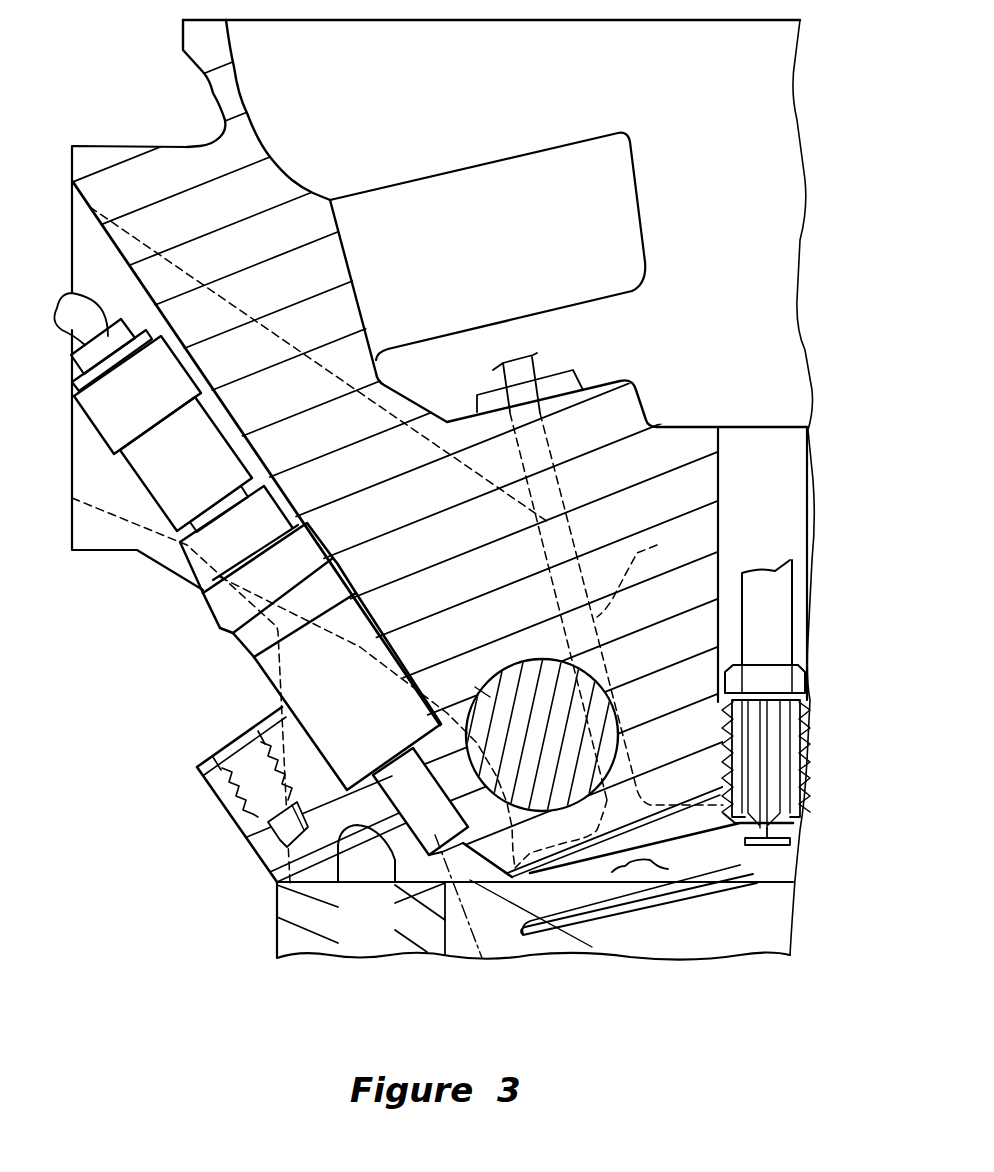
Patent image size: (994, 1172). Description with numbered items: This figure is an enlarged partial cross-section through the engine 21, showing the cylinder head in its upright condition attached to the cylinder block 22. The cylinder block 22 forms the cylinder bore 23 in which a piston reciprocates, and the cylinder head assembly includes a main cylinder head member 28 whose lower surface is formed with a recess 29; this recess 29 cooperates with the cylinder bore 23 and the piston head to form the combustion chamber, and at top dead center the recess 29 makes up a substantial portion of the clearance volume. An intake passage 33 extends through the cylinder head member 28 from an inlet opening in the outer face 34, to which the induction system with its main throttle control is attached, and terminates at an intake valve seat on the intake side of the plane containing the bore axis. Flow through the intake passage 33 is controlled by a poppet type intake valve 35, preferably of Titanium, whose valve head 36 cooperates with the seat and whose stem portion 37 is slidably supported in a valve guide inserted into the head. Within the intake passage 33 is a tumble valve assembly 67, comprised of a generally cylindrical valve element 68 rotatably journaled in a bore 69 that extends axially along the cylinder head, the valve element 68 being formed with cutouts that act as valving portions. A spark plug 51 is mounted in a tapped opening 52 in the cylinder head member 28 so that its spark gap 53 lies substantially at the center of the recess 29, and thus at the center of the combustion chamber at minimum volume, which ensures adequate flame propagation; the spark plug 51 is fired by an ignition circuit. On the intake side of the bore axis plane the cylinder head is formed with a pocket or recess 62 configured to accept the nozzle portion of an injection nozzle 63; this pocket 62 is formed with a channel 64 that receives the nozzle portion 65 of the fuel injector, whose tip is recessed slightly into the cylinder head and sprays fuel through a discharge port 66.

The engine 21 is at (152, 807).
The cylinder block 22 is at (270, 948).
The cylinder bore 23 is at (470, 952).
The main cylinder head member 28 is at (103, 550).
The cylinder head recess 29 is at (783, 865).
The intake passage 33 is at (315, 368).
The outer face 34 is at (80, 170).
The intake valve 35 is at (537, 367).
The valve head 36 is at (700, 880).
The stem portion 37 is at (645, 576).
The spark plug 51 is at (793, 620).
The tapped opening 52 is at (793, 767).
The spark gap 53 is at (787, 843).
The pocket or recess 62 is at (338, 780).
The injection nozzle 63 is at (212, 623).
The channel 64 is at (277, 878).
The nozzle portion 65 is at (280, 897).
The discharge port 66 is at (395, 912).
The tumble valve assembly 67 is at (518, 662).
The valve element 68 is at (475, 687).
The bore 69 is at (593, 690).